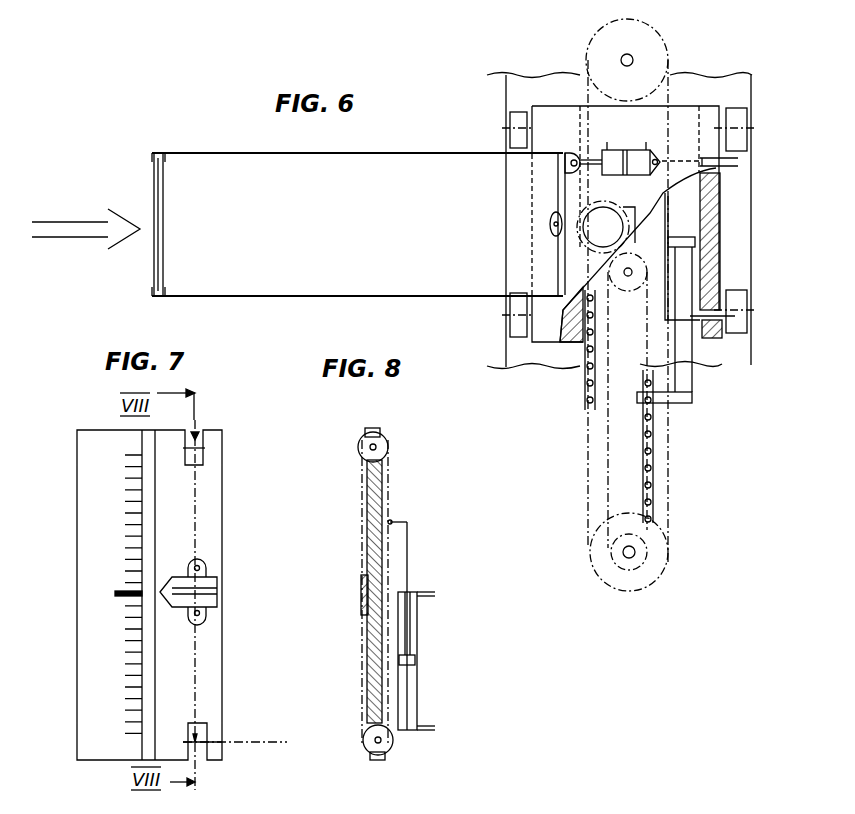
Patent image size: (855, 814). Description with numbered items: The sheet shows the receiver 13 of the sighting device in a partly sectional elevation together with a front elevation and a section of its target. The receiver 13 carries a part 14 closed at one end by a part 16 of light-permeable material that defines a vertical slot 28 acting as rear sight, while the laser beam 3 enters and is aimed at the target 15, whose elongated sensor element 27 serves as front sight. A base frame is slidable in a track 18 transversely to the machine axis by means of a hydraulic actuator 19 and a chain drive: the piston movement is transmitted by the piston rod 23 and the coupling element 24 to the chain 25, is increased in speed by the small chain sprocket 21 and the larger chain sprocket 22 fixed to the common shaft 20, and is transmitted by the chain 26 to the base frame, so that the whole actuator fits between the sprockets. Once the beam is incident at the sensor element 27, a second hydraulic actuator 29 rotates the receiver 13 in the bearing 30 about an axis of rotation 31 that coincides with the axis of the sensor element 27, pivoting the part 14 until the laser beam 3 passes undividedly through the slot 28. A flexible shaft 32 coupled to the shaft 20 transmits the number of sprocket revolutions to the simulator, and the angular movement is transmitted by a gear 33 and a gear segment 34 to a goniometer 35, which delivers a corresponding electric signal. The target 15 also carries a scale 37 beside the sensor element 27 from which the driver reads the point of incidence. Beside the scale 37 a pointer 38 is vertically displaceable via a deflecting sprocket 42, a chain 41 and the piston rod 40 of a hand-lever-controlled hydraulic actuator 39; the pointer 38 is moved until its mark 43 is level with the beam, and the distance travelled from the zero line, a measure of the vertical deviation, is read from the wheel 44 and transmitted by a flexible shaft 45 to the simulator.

In FIG. 6, the laser beam 3 is at (57, 230).
In FIG. 6, the receiver 13 is at (343, 254).
In FIG. 6, the part 14 is at (226, 168).
In FIG. 6, the target 15 is at (558, 152).
In FIG. 7, the target 15 is at (90, 487).
In FIG. 8, the target 15 is at (375, 488).
In FIG. 6, the part defining the slot 16 is at (153, 173).
In FIG. 6, the track 18 is at (753, 352).
In FIG. 6, the hydraulic actuator 19 is at (687, 215).
In FIG. 6, the common shaft 20 is at (626, 560).
In FIG. 6, the small chain sprocket 21 is at (633, 568).
In FIG. 6, the chain sprocket 22 is at (658, 573).
In FIG. 6, the piston rod 23 is at (685, 382).
In FIG. 6, the coupling element 24 is at (675, 400).
In FIG. 6, the chain 25 is at (652, 476).
In FIG. 6, the chain 26 is at (585, 400).
In FIG. 6, the elongated sensor element 27 is at (548, 222).
In FIG. 7, the elongated sensor element 27 is at (148, 545).
In FIG. 6, the slot 28 is at (157, 226).
In FIG. 6, the hydraulic actuator 29 is at (636, 150).
In FIG. 6, the bearing 30 is at (545, 232).
In FIG. 6, the axis of rotation 31 is at (553, 243).
In FIG. 6, the flexible shaft 32 is at (658, 50).
In FIG. 6, the gear 33 is at (598, 208).
In FIG. 6, the gear segment 34 is at (549, 213).
In FIG. 6, the goniometer 35 is at (612, 236).
In FIG. 7, the scale 37 is at (130, 542).
In FIG. 7, the pointer 38 is at (215, 581).
In FIG. 8, the pointer 38 is at (362, 590).
In FIG. 8, the hydraulic actuator 39 is at (410, 683).
In FIG. 8, the piston rod 40 is at (408, 550).
In FIG. 7, the chain 41 is at (198, 678).
In FIG. 8, the chain 41 is at (392, 492).
In FIG. 7, the deflecting sprocket 42 is at (205, 452).
In FIG. 8, the deflecting sprocket 42 is at (380, 447).
In FIG. 7, the mark 43 is at (217, 594).
In FIG. 7, the wheel 44 is at (198, 735).
In FIG. 8, the wheel 44 is at (385, 748).
In FIG. 7, the flexible shaft 45 is at (262, 742).